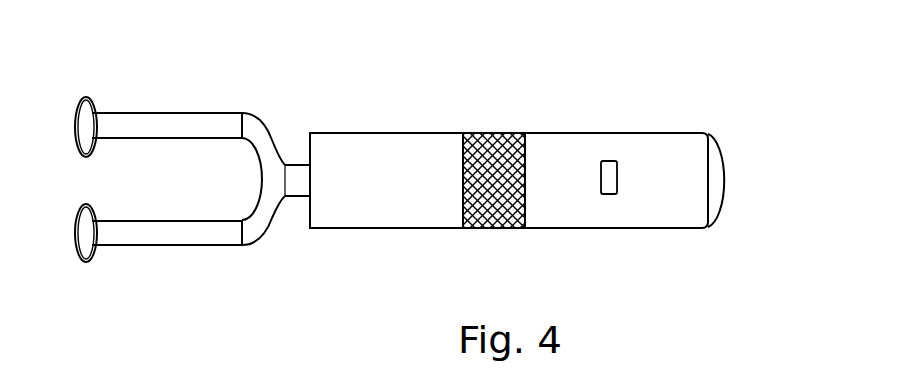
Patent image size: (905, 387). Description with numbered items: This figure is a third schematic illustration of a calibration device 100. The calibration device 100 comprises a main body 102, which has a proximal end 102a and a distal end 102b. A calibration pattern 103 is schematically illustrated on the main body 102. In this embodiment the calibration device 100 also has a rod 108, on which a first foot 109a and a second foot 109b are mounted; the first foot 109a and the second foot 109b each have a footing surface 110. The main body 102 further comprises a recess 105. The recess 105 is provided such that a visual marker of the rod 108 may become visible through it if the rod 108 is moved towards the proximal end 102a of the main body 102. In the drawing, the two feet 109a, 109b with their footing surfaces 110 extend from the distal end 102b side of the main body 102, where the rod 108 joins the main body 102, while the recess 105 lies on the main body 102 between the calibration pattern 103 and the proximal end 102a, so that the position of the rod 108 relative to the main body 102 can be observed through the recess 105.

The calibration device 100 is at (716, 86).
The main body 102 is at (341, 133).
The proximal end 102a is at (724, 220).
The distal end 102b is at (306, 218).
The calibration pattern 103 is at (495, 148).
The recess 105 is at (609, 170).
The rod 108 is at (302, 172).
The first foot 109a is at (199, 125).
The second foot 109b is at (163, 248).
The footing surface 110 is at (87, 97).